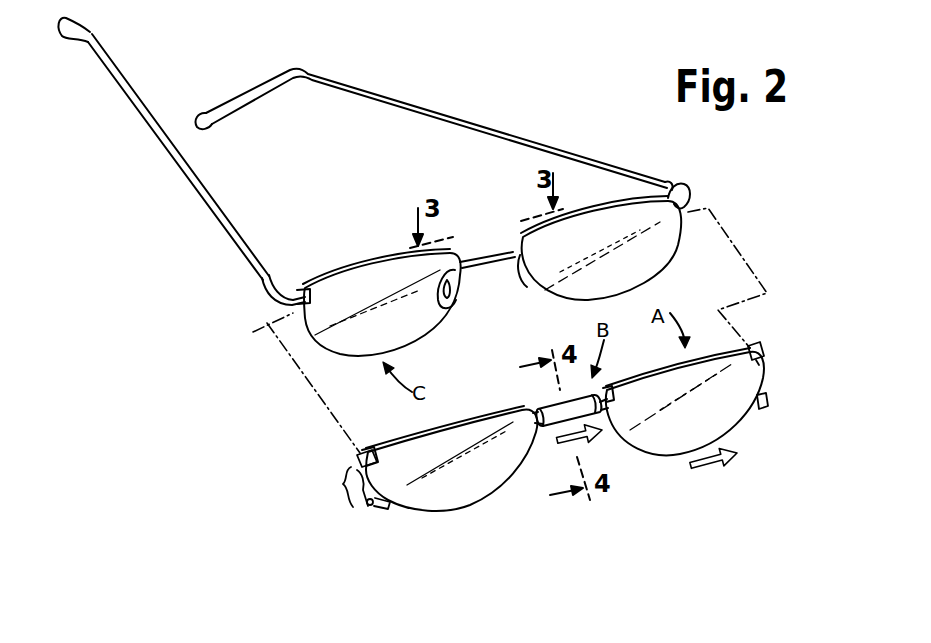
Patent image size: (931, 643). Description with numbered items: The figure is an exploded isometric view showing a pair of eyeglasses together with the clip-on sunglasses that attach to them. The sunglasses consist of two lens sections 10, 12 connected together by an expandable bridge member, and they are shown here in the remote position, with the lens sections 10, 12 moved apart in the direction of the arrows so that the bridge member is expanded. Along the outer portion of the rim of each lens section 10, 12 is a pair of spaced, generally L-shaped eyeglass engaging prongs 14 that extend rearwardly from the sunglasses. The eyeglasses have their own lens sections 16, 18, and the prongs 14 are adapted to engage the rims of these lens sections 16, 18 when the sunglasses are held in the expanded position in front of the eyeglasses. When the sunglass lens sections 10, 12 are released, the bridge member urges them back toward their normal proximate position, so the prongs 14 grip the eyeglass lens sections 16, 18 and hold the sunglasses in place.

The lens section 10 is at (483, 493).
The lens section 12 is at (726, 431).
The eyeglass engaging prong 14 is at (350, 478).
The lens section 16 is at (350, 262).
The lens section 18 is at (617, 205).